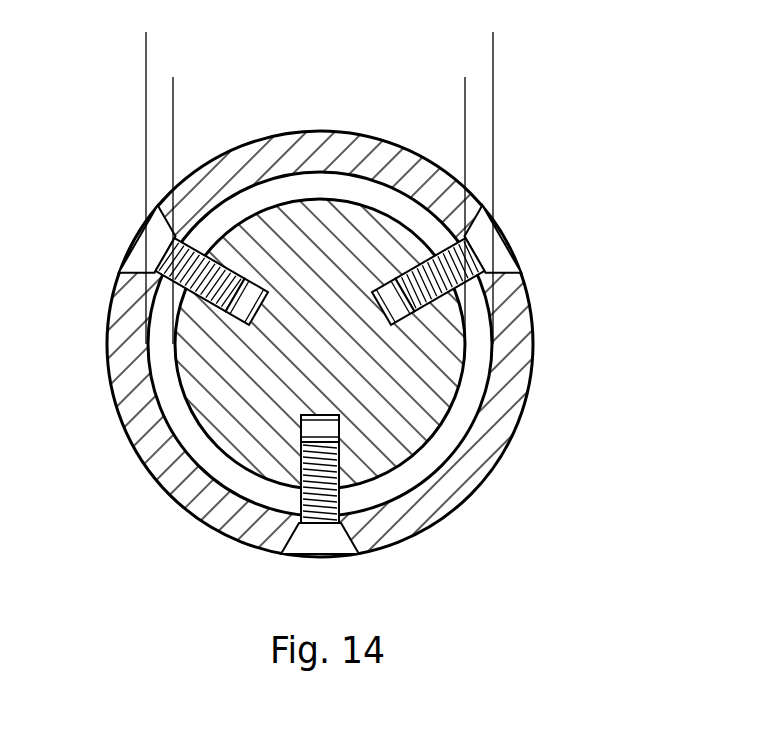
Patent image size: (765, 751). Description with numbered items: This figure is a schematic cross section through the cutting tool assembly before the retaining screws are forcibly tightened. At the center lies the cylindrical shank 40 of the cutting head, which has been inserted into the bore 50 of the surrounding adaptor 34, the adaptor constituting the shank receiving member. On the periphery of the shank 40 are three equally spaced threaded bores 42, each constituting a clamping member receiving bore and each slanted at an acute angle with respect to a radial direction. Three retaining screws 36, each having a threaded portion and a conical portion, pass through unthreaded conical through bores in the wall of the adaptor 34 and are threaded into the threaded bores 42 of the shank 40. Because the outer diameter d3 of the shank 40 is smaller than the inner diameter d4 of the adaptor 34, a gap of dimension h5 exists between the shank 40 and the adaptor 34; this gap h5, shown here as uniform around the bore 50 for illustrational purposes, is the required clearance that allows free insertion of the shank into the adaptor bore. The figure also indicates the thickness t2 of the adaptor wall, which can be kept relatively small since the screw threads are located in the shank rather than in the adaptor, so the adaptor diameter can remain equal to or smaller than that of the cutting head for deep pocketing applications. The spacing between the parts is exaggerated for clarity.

The adaptor 34 is at (513, 318).
The retaining screws 36 is at (123, 235).
The shank 40 is at (227, 364).
The threaded bores 42 is at (300, 438).
The bore 50 is at (187, 437).
The outer diameter of the shank d3 is at (465, 87).
The inner diameter of the adaptor d4 is at (493, 36).
The gap h5 is at (146, 87).
The thickness of the adaptor wall t2 is at (390, 423).